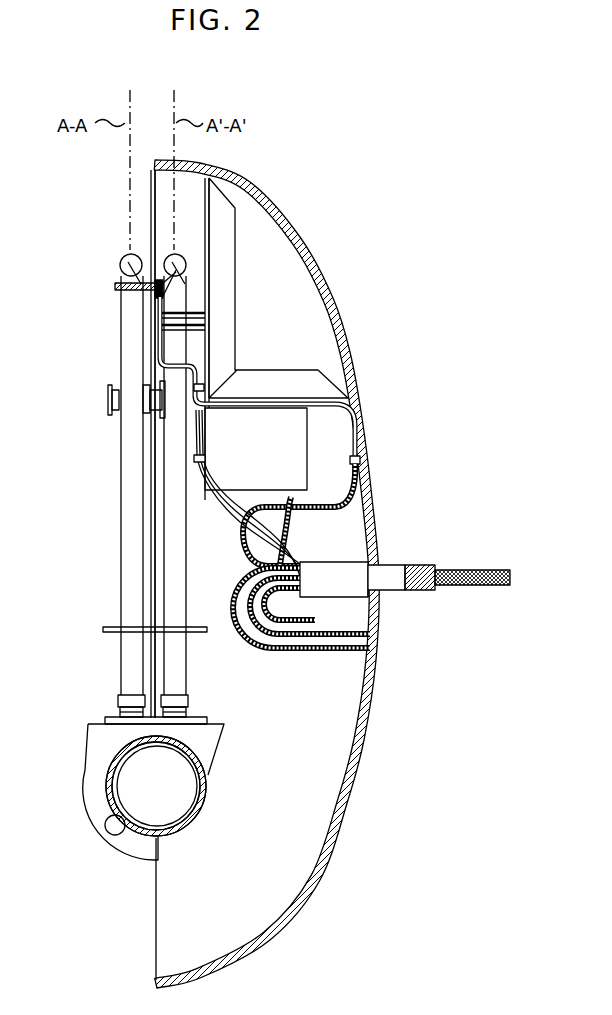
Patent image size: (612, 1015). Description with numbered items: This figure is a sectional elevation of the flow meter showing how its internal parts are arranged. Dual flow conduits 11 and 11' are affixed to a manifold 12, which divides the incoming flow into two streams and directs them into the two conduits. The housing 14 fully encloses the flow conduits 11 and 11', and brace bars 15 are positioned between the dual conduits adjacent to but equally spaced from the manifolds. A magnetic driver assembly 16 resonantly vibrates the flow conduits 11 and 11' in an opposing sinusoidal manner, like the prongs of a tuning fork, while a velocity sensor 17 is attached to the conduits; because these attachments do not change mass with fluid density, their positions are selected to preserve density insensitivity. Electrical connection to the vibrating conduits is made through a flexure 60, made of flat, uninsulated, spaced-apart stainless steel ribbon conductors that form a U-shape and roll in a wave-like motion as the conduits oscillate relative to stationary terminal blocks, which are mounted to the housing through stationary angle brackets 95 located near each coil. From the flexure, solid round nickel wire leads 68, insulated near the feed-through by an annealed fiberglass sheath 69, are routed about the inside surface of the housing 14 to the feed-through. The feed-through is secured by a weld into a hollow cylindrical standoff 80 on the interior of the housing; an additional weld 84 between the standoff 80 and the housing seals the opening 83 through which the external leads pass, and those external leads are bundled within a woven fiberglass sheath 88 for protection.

The flow conduit 11 is at (114, 485).
The flow conduit 11' is at (201, 485).
The manifold 12 is at (220, 748).
The housing 14 is at (330, 875).
The brace bar 15 is at (112, 627).
The magnetic driver assembly 16 is at (131, 303).
The velocity sensor 17 is at (131, 440).
The flexure 60 is at (160, 300).
The nickel wire lead 68 is at (210, 520).
The annealed fiberglass sheath 69 is at (231, 595).
The hollow cylindrical standoff 80 is at (396, 560).
The opening 83 is at (383, 590).
The weld 84 is at (373, 603).
The woven fiberglass sheath 88 is at (491, 568).
The stationary angle bracket 95 is at (236, 348).